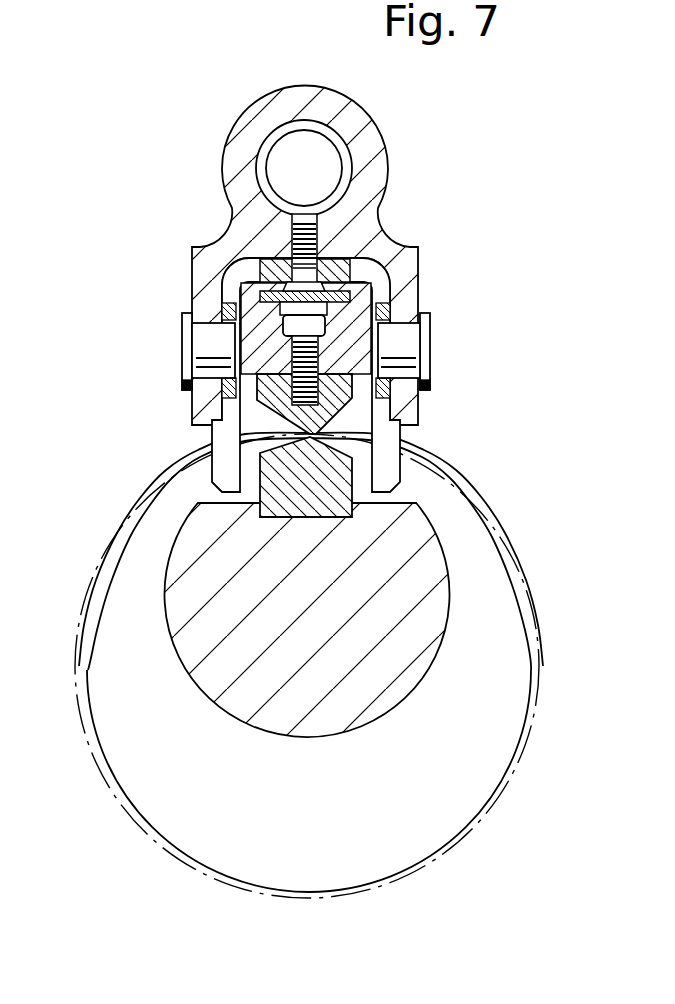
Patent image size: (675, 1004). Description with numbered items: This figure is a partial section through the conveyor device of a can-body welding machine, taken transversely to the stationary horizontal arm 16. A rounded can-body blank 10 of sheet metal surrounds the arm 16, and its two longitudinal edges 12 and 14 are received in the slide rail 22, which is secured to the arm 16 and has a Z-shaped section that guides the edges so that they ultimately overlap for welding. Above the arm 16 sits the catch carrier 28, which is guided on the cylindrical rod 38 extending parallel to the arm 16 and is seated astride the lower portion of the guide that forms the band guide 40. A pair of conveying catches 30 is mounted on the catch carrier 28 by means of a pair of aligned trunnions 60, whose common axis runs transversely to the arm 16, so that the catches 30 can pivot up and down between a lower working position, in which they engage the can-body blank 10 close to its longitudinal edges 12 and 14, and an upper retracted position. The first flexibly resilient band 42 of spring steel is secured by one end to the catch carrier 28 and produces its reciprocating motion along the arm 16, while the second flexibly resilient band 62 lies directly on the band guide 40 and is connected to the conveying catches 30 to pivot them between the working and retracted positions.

The can-body blank 10 is at (500, 806).
The longitudinal edge 12 is at (356, 418).
The longitudinal edge 14 is at (232, 428).
The arm 16 is at (357, 688).
The slide rail 22 is at (258, 522).
The catch carrier 28 is at (233, 158).
The conveying catch 30 is at (174, 480).
The rod 38 is at (293, 150).
The band guide 40 is at (251, 299).
The first band 42 is at (356, 256).
The trunnion 60 is at (201, 343).
The second band 62 is at (350, 288).